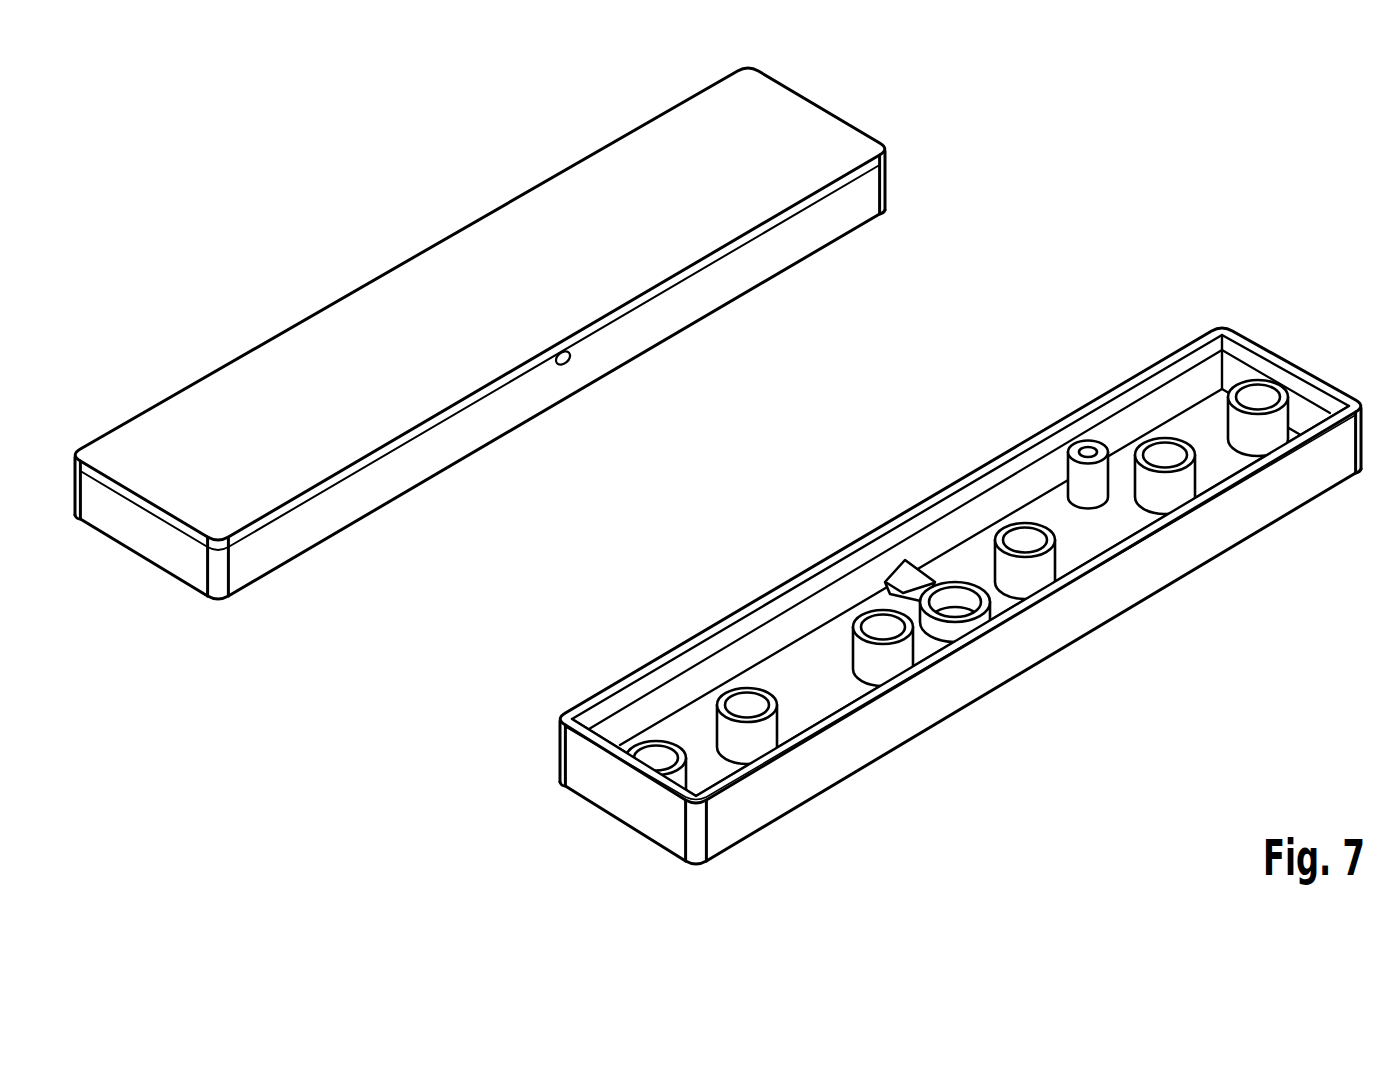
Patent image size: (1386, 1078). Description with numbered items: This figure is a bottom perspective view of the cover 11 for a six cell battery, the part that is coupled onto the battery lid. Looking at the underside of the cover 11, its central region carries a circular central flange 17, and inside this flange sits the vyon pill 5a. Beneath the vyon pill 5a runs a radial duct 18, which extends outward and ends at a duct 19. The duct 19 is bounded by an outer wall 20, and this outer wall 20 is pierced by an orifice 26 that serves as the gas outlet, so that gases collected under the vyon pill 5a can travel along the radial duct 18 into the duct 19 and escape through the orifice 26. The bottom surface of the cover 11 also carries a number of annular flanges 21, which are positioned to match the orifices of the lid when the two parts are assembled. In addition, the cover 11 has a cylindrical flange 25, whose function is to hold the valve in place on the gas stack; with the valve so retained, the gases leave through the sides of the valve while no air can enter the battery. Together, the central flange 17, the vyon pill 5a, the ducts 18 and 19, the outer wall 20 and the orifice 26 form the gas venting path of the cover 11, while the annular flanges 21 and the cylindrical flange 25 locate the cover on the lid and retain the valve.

The cover 11 is at (960, 578).
The circular central flange 17 is at (957, 490).
The vyon pill 5a is at (972, 590).
The radial duct 18 is at (905, 580).
The duct 19 is at (750, 611).
The outer wall 20 is at (657, 660).
The annular flanges 21 is at (977, 578).
The cylindrical flange 25 is at (1092, 440).
The orifice 26 is at (568, 368).